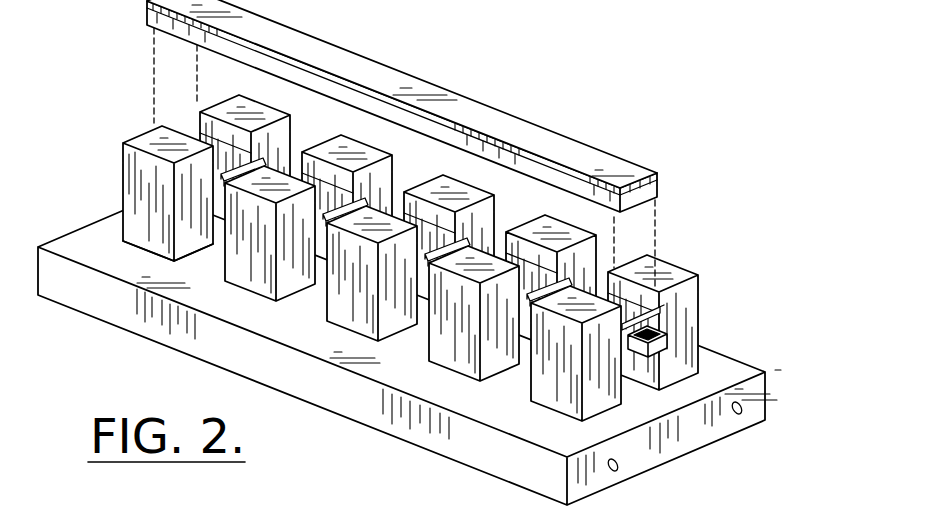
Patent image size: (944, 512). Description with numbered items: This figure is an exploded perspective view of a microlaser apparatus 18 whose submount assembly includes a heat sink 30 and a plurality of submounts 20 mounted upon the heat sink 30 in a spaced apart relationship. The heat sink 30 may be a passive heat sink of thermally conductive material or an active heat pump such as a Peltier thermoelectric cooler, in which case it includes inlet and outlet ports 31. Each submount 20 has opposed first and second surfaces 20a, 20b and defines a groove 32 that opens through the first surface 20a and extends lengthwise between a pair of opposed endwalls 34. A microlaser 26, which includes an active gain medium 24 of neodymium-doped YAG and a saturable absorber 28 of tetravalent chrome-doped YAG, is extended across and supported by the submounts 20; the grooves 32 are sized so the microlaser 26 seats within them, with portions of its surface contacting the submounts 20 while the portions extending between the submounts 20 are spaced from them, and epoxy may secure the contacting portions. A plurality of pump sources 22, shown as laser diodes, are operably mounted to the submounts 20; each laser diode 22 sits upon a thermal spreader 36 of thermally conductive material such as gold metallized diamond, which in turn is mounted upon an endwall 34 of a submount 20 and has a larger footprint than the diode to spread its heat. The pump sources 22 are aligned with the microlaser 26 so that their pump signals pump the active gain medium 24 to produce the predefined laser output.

The microlaser apparatus 18 is at (121, 73).
The submount 20 is at (658, 273).
The first surface 20a is at (155, 142).
The second surface 20b is at (137, 247).
The pump source 22 is at (668, 333).
The active gain medium 24 is at (658, 193).
The microlaser 26 is at (632, 177).
The saturable absorber 28 is at (655, 183).
The heat sink 30 is at (520, 462).
The inlet and outlet ports 31 is at (617, 469).
The groove 32 is at (532, 274).
The endwall 34 is at (552, 380).
The thermal spreader 36 is at (658, 322).